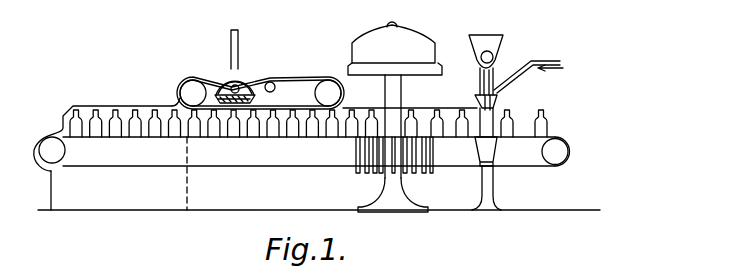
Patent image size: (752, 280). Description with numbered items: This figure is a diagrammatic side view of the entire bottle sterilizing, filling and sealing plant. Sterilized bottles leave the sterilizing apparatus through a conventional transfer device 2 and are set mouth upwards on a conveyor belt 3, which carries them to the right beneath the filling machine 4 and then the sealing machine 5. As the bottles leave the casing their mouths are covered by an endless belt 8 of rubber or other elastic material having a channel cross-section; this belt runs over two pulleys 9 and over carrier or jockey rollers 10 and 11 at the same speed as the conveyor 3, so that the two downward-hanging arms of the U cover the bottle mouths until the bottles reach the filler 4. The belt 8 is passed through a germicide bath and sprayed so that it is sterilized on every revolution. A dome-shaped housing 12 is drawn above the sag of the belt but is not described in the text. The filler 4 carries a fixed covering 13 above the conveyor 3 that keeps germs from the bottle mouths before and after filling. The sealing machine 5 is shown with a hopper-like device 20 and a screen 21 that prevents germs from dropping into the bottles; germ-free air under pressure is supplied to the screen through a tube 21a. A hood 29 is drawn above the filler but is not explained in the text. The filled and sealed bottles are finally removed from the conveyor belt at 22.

The transfer device 2 is at (123, 104).
The conveyor belt 3 is at (246, 138).
The filling machine 4 is at (403, 196).
The sealing machine 5 is at (488, 197).
The belt 8 is at (284, 107).
The pulleys 9 is at (193, 88).
The carrier or jockey roller 10 is at (272, 82).
The carrier or jockey roller 11 is at (234, 85).
The dome housing 12 is at (248, 73).
The covering 13 is at (420, 108).
The filling hopper 20 is at (491, 77).
The screen 21 is at (496, 97).
The tube 21a is at (547, 59).
The removal point 22 is at (532, 116).
The hood of lifting device 29 is at (415, 46).